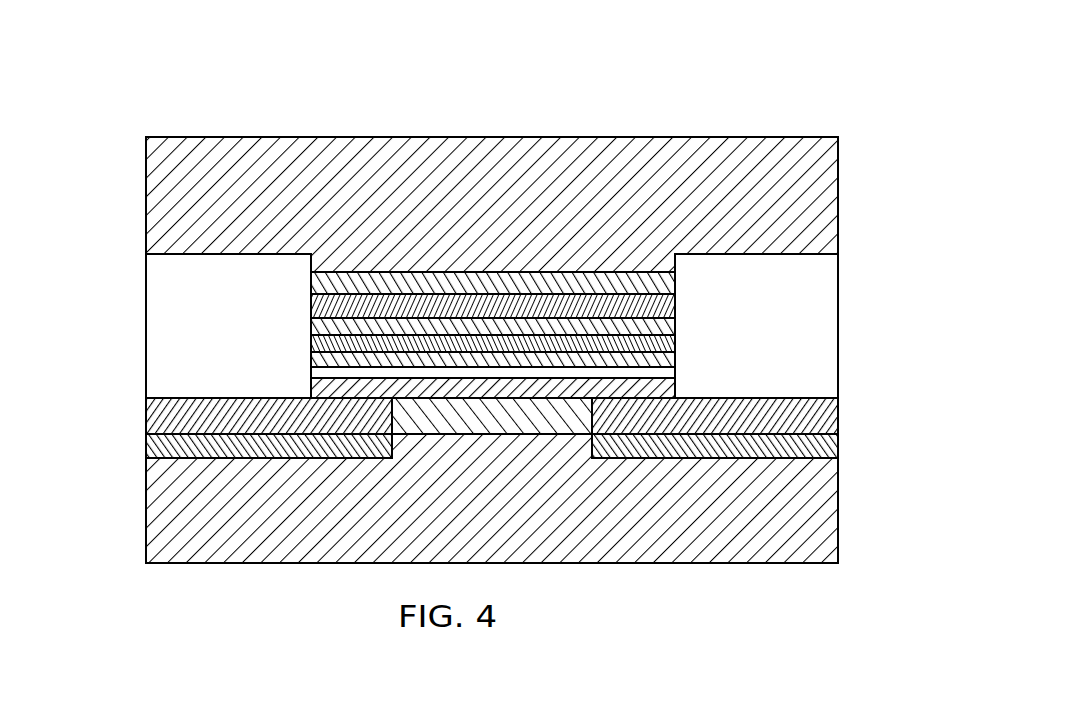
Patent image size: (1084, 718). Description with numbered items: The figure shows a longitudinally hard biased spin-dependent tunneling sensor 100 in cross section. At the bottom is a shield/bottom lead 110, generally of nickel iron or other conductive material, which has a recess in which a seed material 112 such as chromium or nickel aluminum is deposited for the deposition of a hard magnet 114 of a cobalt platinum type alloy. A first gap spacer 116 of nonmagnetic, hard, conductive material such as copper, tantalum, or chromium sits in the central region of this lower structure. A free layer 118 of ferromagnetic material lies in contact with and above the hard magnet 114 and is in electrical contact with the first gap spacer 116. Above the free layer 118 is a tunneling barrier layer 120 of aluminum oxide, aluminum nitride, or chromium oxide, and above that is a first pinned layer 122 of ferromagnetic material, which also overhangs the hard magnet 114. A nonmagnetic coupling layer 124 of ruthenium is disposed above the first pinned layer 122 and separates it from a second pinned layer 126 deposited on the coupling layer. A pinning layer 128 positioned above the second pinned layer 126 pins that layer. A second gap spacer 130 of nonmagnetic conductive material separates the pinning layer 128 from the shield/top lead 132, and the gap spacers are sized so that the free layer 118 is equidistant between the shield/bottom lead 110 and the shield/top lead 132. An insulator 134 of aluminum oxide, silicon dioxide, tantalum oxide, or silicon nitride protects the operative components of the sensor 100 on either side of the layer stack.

The longitudinally hard biased spin-dependent tunneling sensor 100 is at (850, 80).
The shield/bottom lead 110 is at (505, 524).
The seed material 112 is at (838, 450).
The hard magnet 114 is at (838, 417).
The first gap spacer 116 is at (555, 437).
The free layer 118 is at (310, 392).
The tunneling barrier layer 120 is at (310, 372).
The first pinned layer 122 is at (676, 357).
The nonmagnetic coupling layer 124 is at (310, 347).
The second pinned layer 126 is at (676, 325).
The pinning layer 128 is at (310, 312).
The second gap spacer 130 is at (676, 288).
The shield/top lead 132 is at (500, 214).
The insulator 134 is at (240, 324).